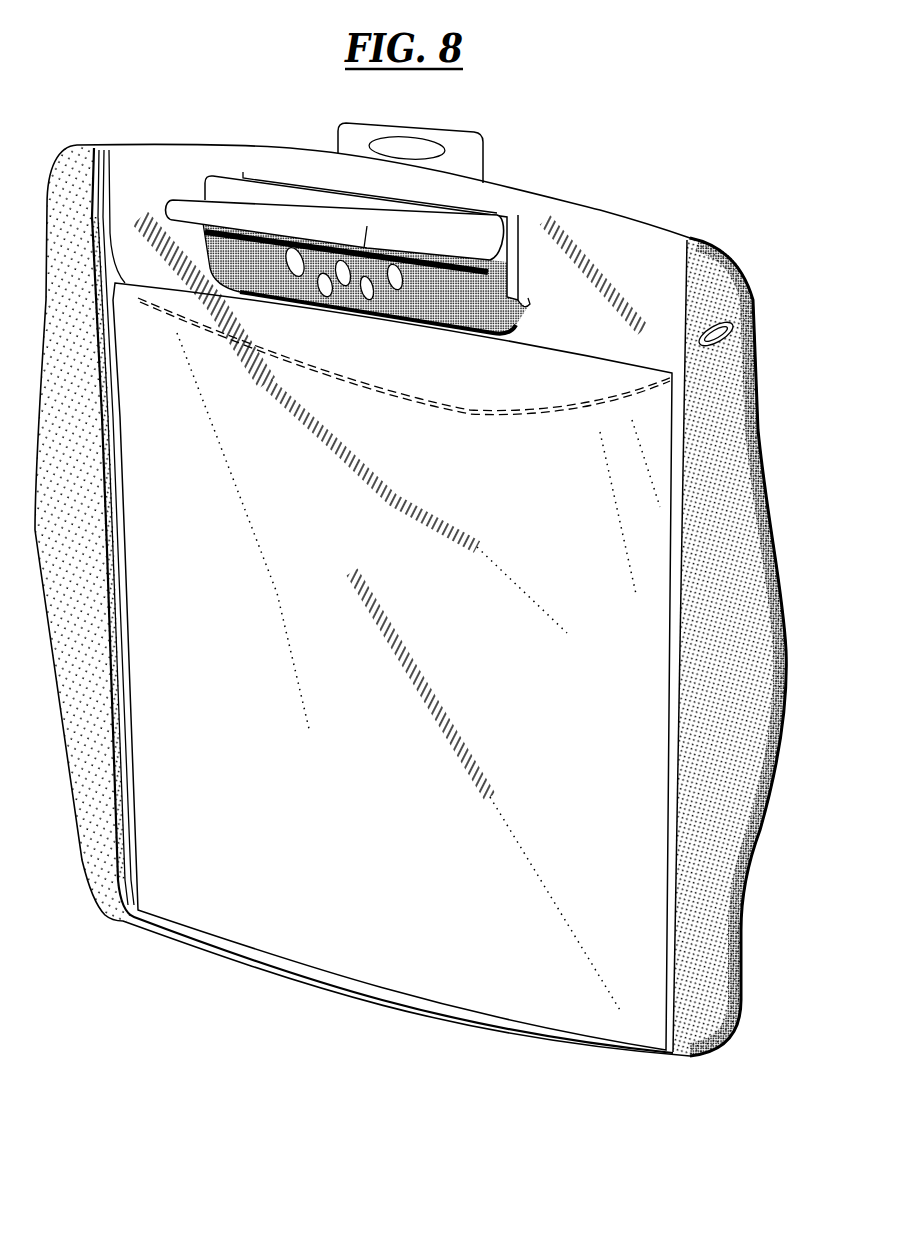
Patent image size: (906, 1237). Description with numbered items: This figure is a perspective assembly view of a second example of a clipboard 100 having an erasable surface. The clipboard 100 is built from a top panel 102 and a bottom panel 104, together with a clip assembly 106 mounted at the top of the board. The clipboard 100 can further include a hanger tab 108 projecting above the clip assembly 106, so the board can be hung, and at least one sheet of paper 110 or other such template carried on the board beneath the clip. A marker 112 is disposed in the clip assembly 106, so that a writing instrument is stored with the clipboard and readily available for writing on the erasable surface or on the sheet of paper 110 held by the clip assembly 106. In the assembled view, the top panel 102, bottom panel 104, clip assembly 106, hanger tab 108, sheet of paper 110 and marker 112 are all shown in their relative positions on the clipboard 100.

The clipboard 100 is at (133, 58).
The top panel 102 is at (618, 215).
The bottom panel 104 is at (373, 1013).
The clip assembly 106 is at (480, 208).
The hanger tab 108 is at (343, 133).
The sheet of paper 110 is at (645, 367).
The marker 112 is at (197, 200).